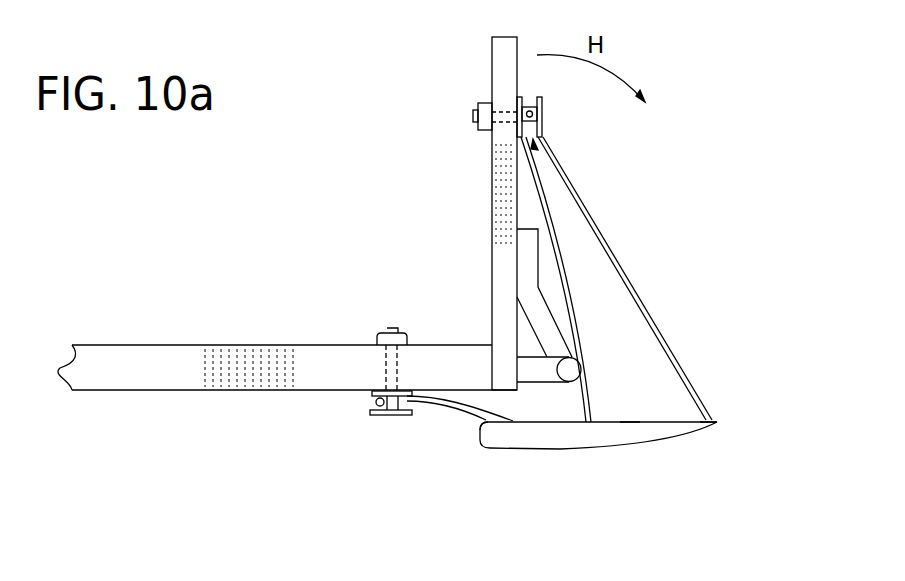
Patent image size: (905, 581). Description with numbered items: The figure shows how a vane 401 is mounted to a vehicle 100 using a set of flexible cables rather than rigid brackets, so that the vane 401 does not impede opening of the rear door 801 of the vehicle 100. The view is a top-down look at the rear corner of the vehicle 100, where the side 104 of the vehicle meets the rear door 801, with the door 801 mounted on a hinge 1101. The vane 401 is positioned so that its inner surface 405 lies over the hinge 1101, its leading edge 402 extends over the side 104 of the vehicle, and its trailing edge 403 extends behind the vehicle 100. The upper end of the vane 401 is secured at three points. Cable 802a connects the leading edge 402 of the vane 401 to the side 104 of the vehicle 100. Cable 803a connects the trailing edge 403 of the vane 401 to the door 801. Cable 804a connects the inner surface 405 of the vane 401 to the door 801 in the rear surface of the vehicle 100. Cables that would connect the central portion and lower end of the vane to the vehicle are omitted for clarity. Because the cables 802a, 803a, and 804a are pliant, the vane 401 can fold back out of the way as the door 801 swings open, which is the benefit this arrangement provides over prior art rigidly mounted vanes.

The vehicle 100 is at (287, 228).
The side of vehicle 104 is at (150, 345).
The rear door 801 is at (495, 196).
The cable 803a is at (565, 182).
The hinge 1101 is at (543, 308).
The cable 804a is at (586, 320).
The inner surface of vane 405 is at (630, 422).
The trailing edge of vane 403 is at (717, 422).
The vane 401 is at (635, 432).
The leading edge of vane 402 is at (483, 435).
The cable 802a is at (447, 400).